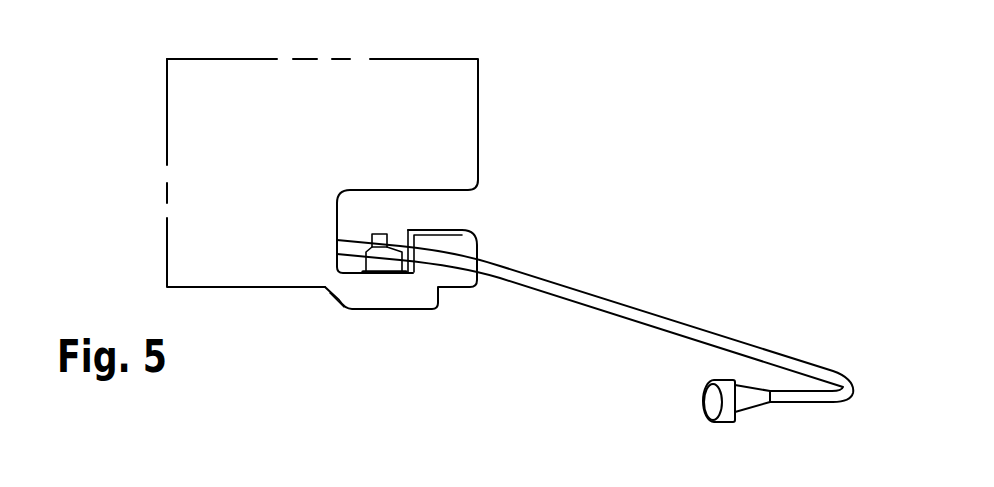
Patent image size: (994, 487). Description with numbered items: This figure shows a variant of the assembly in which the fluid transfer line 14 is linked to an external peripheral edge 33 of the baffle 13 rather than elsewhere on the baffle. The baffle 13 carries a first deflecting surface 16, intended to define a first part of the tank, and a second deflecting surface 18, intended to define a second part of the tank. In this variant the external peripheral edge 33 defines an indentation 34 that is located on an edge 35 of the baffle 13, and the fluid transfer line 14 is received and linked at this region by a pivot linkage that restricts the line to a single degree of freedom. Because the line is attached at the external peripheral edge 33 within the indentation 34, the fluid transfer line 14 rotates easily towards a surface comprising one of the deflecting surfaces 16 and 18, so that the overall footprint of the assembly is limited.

The baffle 13 is at (173, 143).
The fluid transfer line 14 is at (643, 296).
The first deflecting surface 16 is at (428, 240).
The second deflecting surface 18 is at (406, 236).
The external peripheral edge 33 is at (358, 273).
The indentation 34 is at (383, 217).
The edge 35 is at (478, 127).